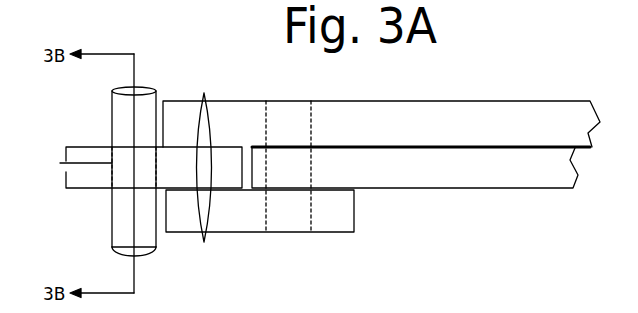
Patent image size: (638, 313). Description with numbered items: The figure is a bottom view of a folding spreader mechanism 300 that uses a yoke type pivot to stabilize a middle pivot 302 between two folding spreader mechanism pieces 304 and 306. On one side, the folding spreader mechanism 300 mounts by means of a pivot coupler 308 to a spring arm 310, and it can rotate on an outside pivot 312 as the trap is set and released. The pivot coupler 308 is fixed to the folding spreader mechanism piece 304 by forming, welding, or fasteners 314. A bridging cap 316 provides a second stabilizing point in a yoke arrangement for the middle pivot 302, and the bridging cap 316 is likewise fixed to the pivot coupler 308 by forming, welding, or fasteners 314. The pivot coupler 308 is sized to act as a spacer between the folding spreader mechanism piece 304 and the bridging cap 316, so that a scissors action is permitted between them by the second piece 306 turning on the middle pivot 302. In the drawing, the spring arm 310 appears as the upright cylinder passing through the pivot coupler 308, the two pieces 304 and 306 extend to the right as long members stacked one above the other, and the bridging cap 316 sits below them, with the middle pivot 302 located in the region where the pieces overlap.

The folding spreader mechanism 300 is at (554, 46).
The middle pivot 302 is at (313, 212).
The folding spreader mechanism piece 304 is at (450, 132).
The folding spreader mechanism piece 306 is at (456, 177).
The pivot coupler 308 is at (86, 147).
The spring arm 310 is at (117, 205).
The outside pivot 312 is at (60, 163).
The fasteners 314 is at (207, 105).
The bridging cap 316 is at (240, 223).